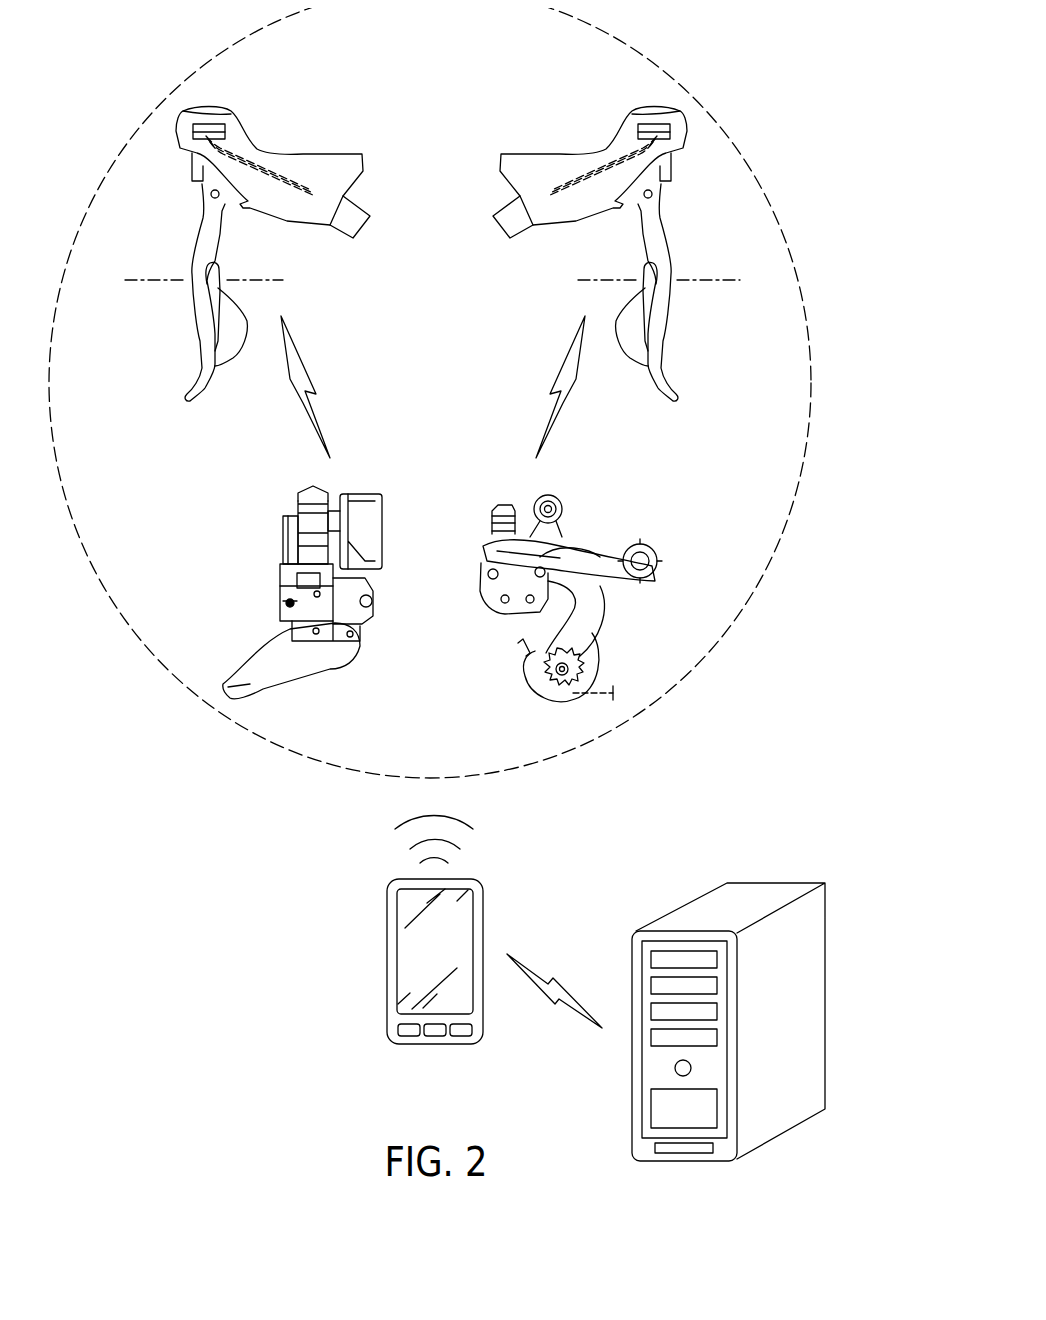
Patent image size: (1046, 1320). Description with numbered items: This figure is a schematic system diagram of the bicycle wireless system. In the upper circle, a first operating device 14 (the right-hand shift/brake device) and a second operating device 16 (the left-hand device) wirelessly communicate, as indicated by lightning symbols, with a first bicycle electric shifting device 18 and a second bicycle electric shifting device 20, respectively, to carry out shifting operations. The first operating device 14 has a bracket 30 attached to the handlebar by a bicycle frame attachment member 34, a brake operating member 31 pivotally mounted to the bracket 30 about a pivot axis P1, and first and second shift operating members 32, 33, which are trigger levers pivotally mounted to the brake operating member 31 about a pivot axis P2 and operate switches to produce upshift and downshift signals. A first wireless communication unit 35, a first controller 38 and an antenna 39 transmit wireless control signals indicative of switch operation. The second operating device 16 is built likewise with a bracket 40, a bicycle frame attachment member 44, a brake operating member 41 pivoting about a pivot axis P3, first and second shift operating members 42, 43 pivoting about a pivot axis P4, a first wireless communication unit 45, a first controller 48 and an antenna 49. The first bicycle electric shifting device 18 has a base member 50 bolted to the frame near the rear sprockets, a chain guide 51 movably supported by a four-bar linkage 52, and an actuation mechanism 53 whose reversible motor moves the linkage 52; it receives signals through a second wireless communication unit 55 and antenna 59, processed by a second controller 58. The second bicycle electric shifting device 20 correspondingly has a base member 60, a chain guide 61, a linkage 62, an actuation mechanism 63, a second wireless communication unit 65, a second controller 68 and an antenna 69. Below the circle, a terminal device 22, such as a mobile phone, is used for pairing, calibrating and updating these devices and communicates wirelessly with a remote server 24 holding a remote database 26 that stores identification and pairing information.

The first operating device 14 is at (566, 83).
The second operating device 16 is at (298, 78).
The first bicycle electric shifting device 18 is at (654, 532).
The second bicycle electric shifting device 20 is at (369, 490).
The terminal device 22 is at (384, 909).
The remote server 24 is at (682, 893).
The remote database 26 is at (652, 1108).
The bracket 30 is at (537, 167).
The brake operating member 31 is at (664, 240).
The first shift operating member 32 is at (644, 267).
The second shift operating member 33 is at (633, 332).
The bicycle frame attachment member 34 is at (495, 224).
The first wireless communication unit 35 is at (676, 152).
The first controller 38 is at (628, 125).
The antenna 39 is at (583, 168).
The bracket 40 is at (323, 163).
The brake operating member 41 is at (202, 240).
The first shift operating member 42 is at (221, 266).
The second shift operating member 43 is at (230, 332).
The bicycle frame attachment member 44 is at (367, 223).
The first wireless communication unit 45 is at (188, 152).
The first controller 48 is at (235, 125).
The antenna 49 is at (280, 168).
The base member 50 is at (483, 583).
The chain guide 51 is at (592, 633).
The linkage 52 is at (577, 607).
The actuation mechanism 53 is at (497, 550).
The second wireless communication unit 55 is at (496, 522).
The second controller 58 is at (494, 532).
The antenna 59 is at (507, 512).
The base member 60 is at (366, 590).
The chain guide 61 is at (252, 663).
The linkage 62 is at (289, 592).
The actuation mechanism 63 is at (382, 537).
The second wireless communication unit 65 is at (298, 503).
The second controller 68 is at (286, 518).
The antenna 69 is at (299, 492).
The pivot axis P1 is at (653, 194).
The pivot axis P2 is at (727, 282).
The pivot axis P3 is at (210, 194).
The pivot axis P4 is at (136, 282).